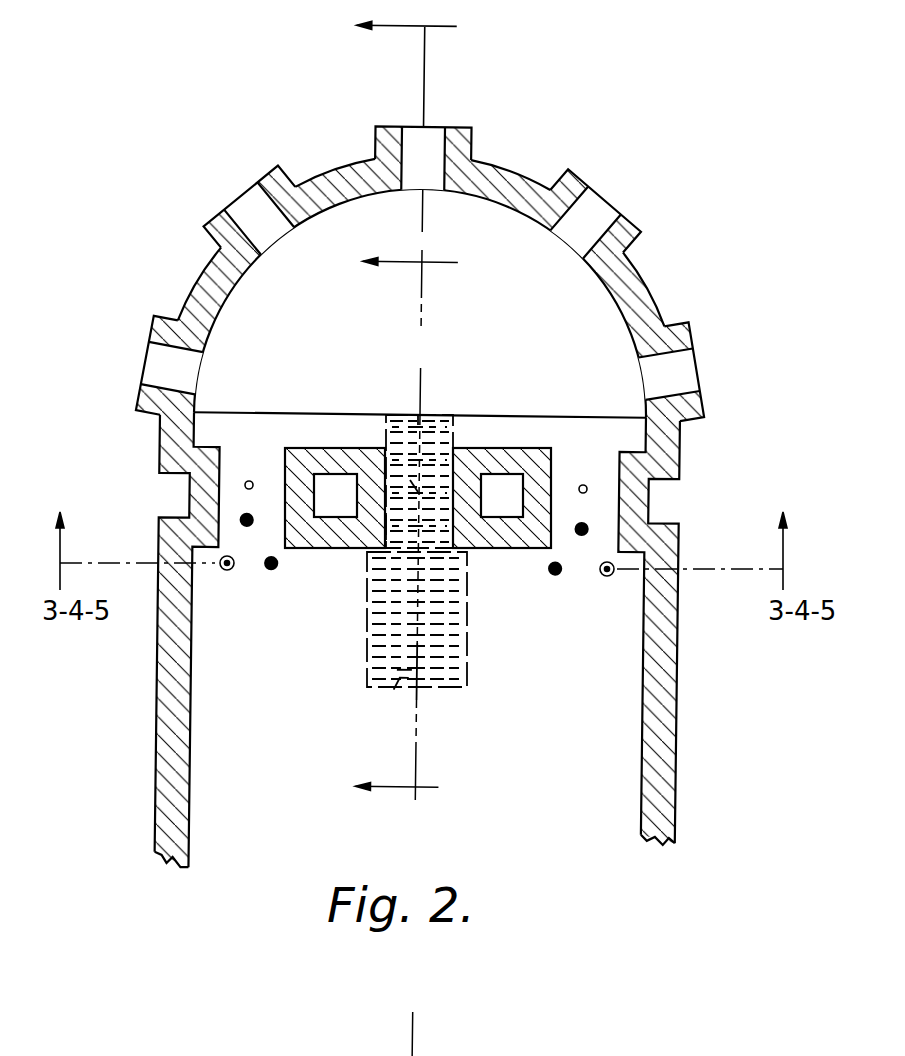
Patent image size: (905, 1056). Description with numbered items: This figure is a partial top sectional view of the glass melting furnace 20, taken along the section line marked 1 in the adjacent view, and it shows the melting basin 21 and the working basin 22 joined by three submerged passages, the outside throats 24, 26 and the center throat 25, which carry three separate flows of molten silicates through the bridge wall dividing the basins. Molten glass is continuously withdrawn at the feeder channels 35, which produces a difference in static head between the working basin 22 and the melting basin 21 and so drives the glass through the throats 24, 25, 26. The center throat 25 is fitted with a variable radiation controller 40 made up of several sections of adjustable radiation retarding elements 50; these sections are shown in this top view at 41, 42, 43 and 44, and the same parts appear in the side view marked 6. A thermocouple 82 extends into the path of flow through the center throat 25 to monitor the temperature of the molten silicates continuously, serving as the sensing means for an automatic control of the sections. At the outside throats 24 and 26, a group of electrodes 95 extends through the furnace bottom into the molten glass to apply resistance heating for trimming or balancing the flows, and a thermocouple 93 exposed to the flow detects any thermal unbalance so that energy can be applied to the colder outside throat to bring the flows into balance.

The glass melting furnace 20 is at (180, 272).
The melting basin 21 is at (610, 750).
The working basin 22 is at (580, 308).
The throat 24 is at (260, 432).
The center throat 25 is at (430, 427).
The throat 26 is at (580, 457).
The feeder channel 35 is at (410, 132).
The variable radiation controller 40 is at (435, 646).
The section 41 is at (367, 658).
The section 42 is at (467, 575).
The section 43 is at (384, 527).
The section 44 is at (413, 460).
The adjustable radiation retarding element 50 is at (397, 695).
The thermocouple 82 is at (414, 485).
The thermocouple 93 is at (249, 480).
The group of electrodes 95 is at (229, 584).
The section line 1 is at (414, 72).
The section line 6 is at (417, 530).